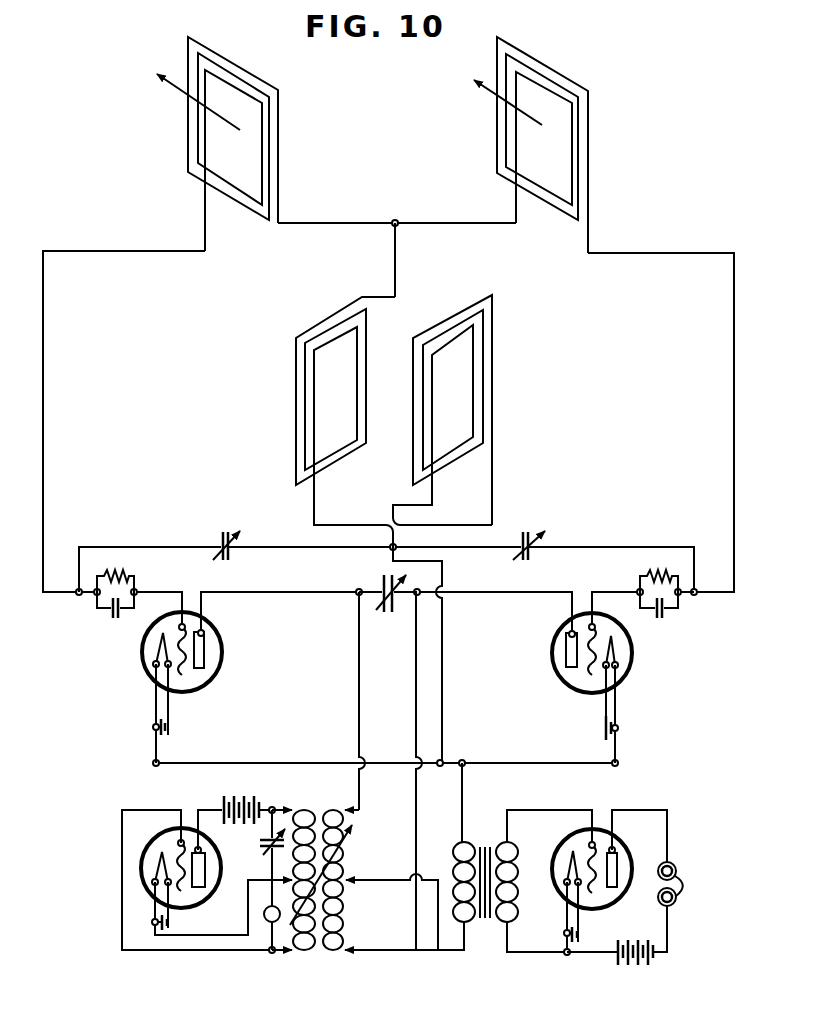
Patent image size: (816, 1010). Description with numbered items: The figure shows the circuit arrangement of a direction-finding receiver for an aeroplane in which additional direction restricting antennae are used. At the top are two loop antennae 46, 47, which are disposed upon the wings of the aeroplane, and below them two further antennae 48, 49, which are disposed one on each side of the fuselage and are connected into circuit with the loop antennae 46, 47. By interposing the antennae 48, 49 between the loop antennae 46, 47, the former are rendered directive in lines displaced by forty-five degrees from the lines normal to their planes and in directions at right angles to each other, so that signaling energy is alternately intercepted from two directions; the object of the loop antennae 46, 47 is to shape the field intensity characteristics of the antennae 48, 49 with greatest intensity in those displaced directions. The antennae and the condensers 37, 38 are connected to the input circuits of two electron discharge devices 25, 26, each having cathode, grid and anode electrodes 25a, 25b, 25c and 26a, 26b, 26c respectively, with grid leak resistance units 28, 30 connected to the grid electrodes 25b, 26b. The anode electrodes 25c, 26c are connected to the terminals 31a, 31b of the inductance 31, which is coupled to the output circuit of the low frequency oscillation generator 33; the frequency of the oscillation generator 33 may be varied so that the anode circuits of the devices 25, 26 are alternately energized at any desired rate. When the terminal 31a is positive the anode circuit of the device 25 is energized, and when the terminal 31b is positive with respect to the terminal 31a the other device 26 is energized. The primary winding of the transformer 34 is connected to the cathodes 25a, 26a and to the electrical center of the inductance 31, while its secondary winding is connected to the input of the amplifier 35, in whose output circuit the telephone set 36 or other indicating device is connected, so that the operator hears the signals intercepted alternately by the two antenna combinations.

The electron discharge device 25 is at (225, 646).
The cathode electrode 25a is at (158, 655).
The grid electrode 25b is at (179, 677).
The anode electrode 25c is at (212, 670).
The electron discharge device 26 is at (549, 644).
The cathode electrode 26a is at (618, 655).
The grid electrode 26b is at (590, 673).
The anode electrode 26c is at (565, 664).
The grid leak resistance unit 28 is at (137, 574).
The grid leak resistance unit 30 is at (636, 575).
The inductance 31 is at (345, 897).
The terminal of the inductance 31a is at (340, 806).
The terminal of the inductance 31b is at (340, 958).
The low frequency oscillation generator 33 is at (139, 915).
The transformer 34 is at (487, 928).
The amplifier 35 is at (639, 839).
The telephone set 36 is at (689, 875).
The condenser 37 is at (221, 534).
The condenser 38 is at (520, 534).
The loop antenna 46 is at (277, 155).
The loop antenna 47 is at (583, 152).
The antenna 48 is at (499, 388).
The antenna 49 is at (293, 410).